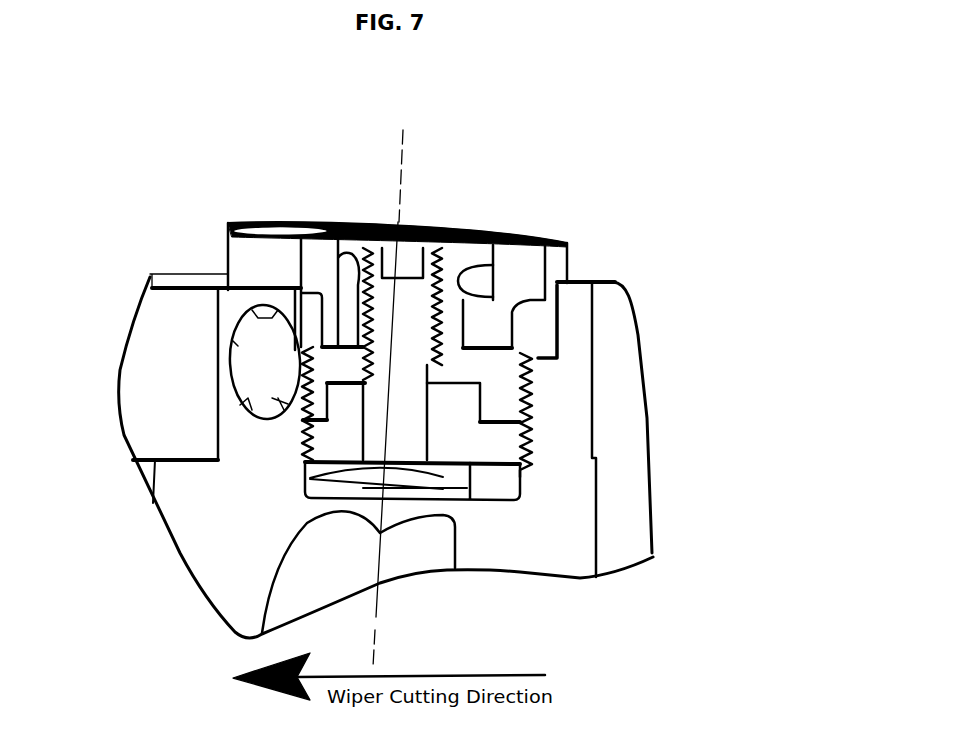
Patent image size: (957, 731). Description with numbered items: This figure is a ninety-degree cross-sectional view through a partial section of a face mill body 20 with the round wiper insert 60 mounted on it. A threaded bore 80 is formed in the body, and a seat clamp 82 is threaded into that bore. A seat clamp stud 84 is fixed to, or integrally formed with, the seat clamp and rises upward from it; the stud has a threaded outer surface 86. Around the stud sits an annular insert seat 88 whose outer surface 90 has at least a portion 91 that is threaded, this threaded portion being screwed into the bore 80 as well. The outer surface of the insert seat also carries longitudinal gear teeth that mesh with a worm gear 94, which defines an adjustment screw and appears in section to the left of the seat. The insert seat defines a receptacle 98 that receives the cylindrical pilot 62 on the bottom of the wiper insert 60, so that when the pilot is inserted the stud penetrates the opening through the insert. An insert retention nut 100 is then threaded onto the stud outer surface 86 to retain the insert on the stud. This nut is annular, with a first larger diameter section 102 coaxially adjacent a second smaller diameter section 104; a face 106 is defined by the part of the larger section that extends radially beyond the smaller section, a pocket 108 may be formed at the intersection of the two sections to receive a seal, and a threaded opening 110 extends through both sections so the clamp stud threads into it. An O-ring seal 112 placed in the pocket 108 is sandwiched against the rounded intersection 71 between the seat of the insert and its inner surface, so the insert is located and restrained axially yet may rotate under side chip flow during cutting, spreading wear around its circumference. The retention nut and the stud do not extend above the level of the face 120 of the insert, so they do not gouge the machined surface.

The face mill body 20 is at (612, 335).
The round wiper insert 60 is at (265, 221).
The cylindrical pilot 62 is at (507, 351).
The intersection 71 is at (453, 305).
The threaded bore 80 is at (528, 443).
The seat clamp 82 is at (525, 473).
The seat clamp stud 84 is at (408, 365).
The threaded outer surface 86 is at (368, 350).
The annular insert seat 88 is at (528, 412).
The outer surface 90 is at (533, 393).
The threaded portion 91 is at (303, 407).
The worm gear 94 is at (245, 375).
The receptacle 98 is at (322, 318).
The insert retention nut 100 is at (510, 233).
The first larger diameter section 102 is at (468, 240).
The second smaller diameter section 104 is at (432, 240).
The face 106 is at (461, 266).
The pocket 108 is at (345, 225).
The threaded opening 110 is at (367, 222).
The O-ring seal 112 is at (327, 222).
The face of the insert 120 is at (228, 223).